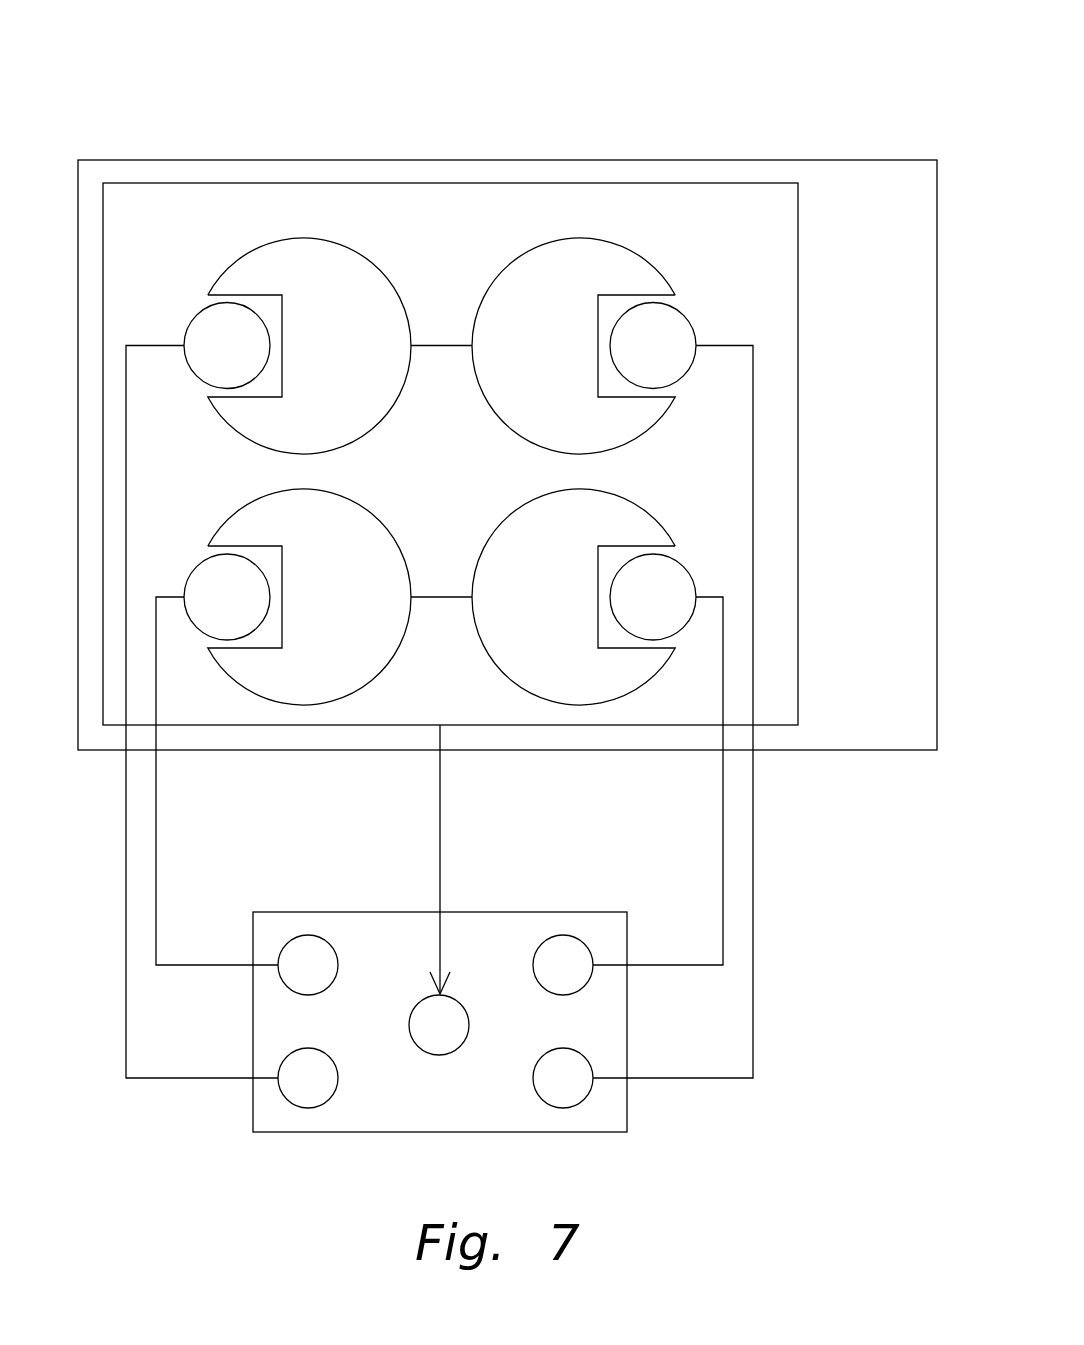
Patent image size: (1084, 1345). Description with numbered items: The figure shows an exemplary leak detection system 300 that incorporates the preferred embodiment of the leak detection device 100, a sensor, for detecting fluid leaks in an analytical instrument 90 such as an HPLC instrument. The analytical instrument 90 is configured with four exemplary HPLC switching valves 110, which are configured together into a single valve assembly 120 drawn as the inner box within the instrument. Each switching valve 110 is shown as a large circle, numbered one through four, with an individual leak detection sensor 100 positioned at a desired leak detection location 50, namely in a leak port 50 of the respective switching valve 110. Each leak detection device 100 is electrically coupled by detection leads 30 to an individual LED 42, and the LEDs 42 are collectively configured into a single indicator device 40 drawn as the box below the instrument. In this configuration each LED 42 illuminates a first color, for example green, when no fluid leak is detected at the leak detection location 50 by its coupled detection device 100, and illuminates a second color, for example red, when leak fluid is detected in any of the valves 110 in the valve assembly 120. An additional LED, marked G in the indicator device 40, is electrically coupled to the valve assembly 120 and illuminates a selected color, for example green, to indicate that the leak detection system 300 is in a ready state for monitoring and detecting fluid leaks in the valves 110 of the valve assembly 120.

The leak detection system 300 is at (133, 103).
The analytical instrument 90 is at (857, 234).
The valve assembly 120 is at (710, 259).
The switching valve 110 is at (297, 355).
The leak detection device 100 is at (197, 355).
The leak detection location 50 is at (252, 295).
The detection leads 30 is at (125, 848).
The indicator device 40 is at (417, 1104).
The LED 42 is at (287, 977).